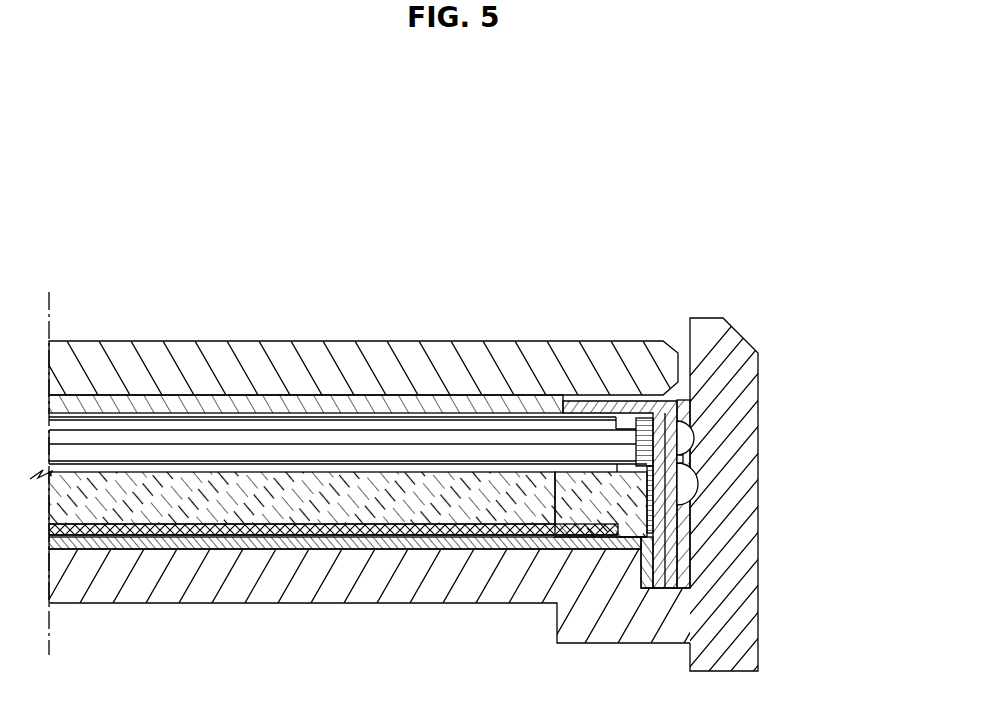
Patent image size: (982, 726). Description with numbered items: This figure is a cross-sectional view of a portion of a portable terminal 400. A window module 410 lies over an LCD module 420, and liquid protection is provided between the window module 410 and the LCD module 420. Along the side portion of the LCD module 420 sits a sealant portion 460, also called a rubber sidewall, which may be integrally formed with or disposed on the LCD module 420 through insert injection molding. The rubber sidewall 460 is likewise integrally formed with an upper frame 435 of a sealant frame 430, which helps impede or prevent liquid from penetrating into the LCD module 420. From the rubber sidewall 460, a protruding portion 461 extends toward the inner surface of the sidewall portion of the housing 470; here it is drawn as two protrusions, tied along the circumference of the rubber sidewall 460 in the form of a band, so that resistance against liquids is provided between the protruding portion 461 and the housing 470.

The portable terminal 400 is at (503, 142).
The window module 410 is at (255, 338).
The LCD module 420 is at (352, 402).
The sealant frame 430 is at (680, 562).
The upper frame 435 is at (662, 535).
The sealant portion 460 is at (692, 516).
The protruding portion 461 is at (698, 475).
The housing 470 is at (750, 315).